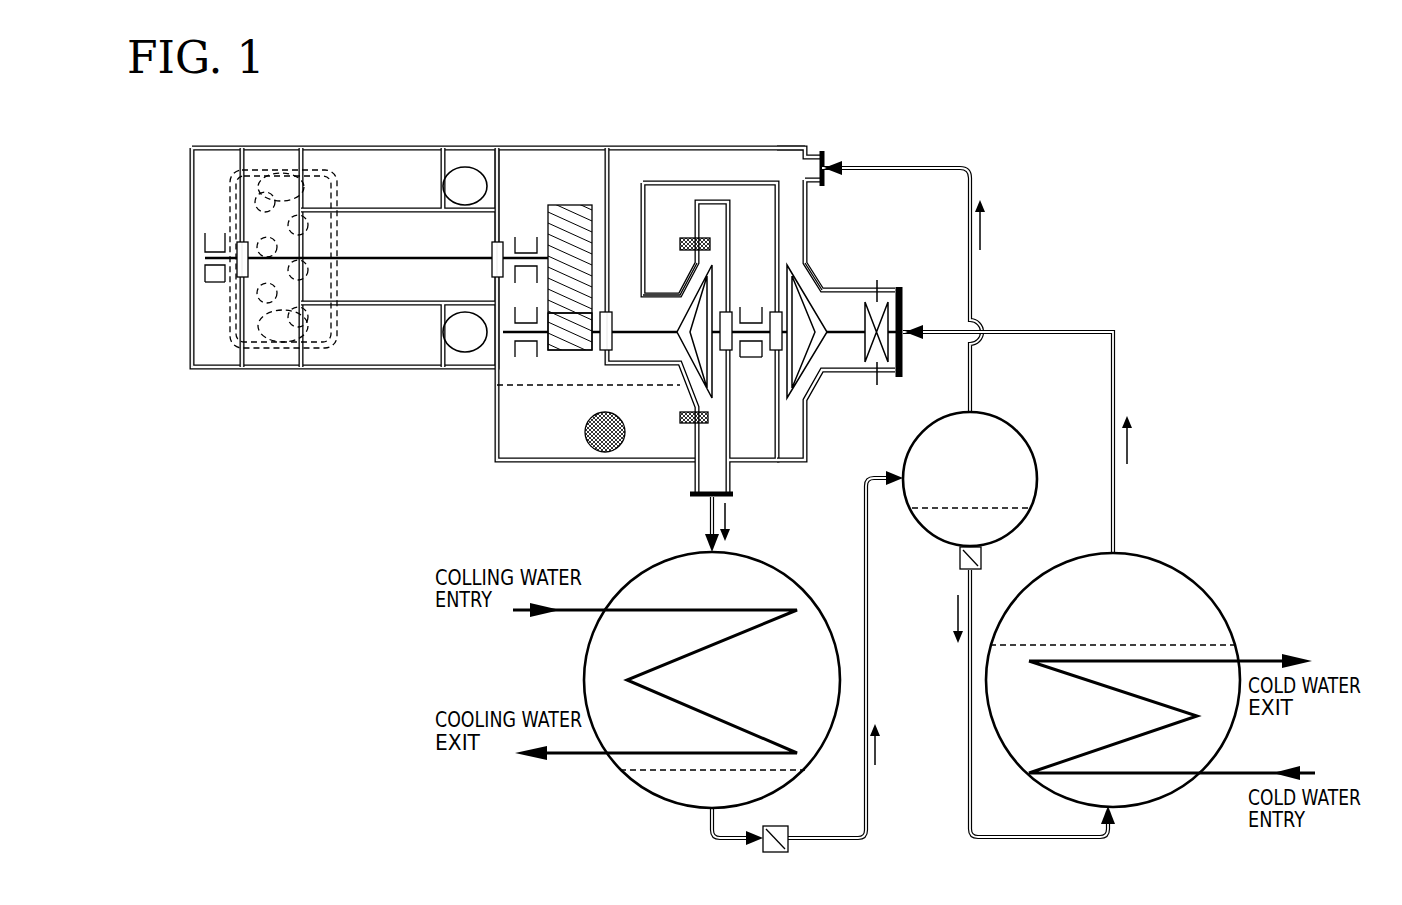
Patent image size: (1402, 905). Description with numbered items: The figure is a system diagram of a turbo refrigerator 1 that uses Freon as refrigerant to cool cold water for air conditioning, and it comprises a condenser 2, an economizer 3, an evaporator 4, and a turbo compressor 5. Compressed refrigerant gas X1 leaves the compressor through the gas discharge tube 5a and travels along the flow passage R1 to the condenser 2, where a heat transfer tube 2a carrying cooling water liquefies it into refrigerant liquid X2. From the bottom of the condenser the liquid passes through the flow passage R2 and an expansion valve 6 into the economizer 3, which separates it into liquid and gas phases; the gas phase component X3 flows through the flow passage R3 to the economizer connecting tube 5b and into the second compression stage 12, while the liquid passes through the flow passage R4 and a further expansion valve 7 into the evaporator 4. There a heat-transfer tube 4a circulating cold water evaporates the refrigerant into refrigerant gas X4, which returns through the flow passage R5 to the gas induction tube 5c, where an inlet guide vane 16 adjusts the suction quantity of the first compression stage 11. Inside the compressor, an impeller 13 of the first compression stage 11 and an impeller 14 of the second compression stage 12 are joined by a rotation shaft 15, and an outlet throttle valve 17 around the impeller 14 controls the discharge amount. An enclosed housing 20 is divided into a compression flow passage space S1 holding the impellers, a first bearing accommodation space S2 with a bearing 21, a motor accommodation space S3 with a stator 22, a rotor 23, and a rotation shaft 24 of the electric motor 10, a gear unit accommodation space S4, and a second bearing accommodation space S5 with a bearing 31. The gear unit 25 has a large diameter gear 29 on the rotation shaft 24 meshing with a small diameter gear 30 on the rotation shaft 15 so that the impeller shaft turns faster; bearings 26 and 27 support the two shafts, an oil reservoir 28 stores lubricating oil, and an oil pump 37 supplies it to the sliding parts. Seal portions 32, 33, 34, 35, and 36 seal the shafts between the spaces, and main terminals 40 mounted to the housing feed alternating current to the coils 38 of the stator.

The turbo refrigerator 1 is at (1108, 208).
The condenser 2 is at (795, 590).
The heat transfer tube 2a is at (638, 608).
The economizer 3 is at (1022, 432).
The evaporator 4 is at (1195, 572).
The heat-transfer tube 4a is at (1086, 655).
The turbo compressor 5 is at (817, 217).
The gas discharge tube 5a is at (732, 472).
The economizer connecting tube 5b is at (812, 153).
The gas induction tube 5c is at (852, 375).
The expansion valve 6 is at (790, 828).
The expansion valve 7 is at (957, 556).
The electric motor 10 is at (298, 140).
The first compression stage 11 is at (822, 280).
The second compression stage 12 is at (680, 276).
The impeller 13 is at (820, 310).
The impeller 14 is at (695, 296).
The rotation shaft 15 is at (750, 308).
The inlet guide vane 16 is at (884, 300).
The outlet throttle valve 17 is at (692, 238).
The housing 20 is at (548, 148).
The bearing 21 is at (750, 362).
The stator 22 is at (452, 165).
The rotor 23 is at (447, 250).
The rotation shaft 24 is at (282, 258).
The gear unit 25 is at (541, 195).
The bearing 26 is at (526, 232).
The bearing 27 is at (524, 360).
The oil reservoir 28 is at (640, 463).
The large diameter gear 29 is at (568, 205).
The small diameter gear 30 is at (572, 352).
The bearing 31 is at (213, 292).
The seal portion 32 is at (774, 310).
The seal portion 33 is at (724, 354).
The seal portion 34 is at (613, 318).
The seal portion 35 is at (491, 268).
The seal portion 36 is at (236, 250).
The oil pump 37 is at (626, 424).
The coils 38 is at (476, 168).
The main terminals 40 is at (250, 298).
The compression flow passage space S1 is at (716, 165).
The first bearing accommodation space S2 is at (749, 200).
The motor accommodation space S3 is at (266, 158).
The gear unit accommodation space S4 is at (582, 165).
The second bearing accommodation space S5 is at (210, 158).
The flow passage R1 is at (708, 530).
The flow passage R2 is at (869, 676).
The flow passage R3 is at (966, 240).
The flow passage R4 is at (968, 712).
The flow passage R5 is at (1110, 448).
The compressed refrigerant gas X1 is at (741, 522).
The refrigerant liquid X2 is at (916, 681).
The gas phase component X3 is at (996, 225).
The refrigerant gas X4 is at (1142, 440).